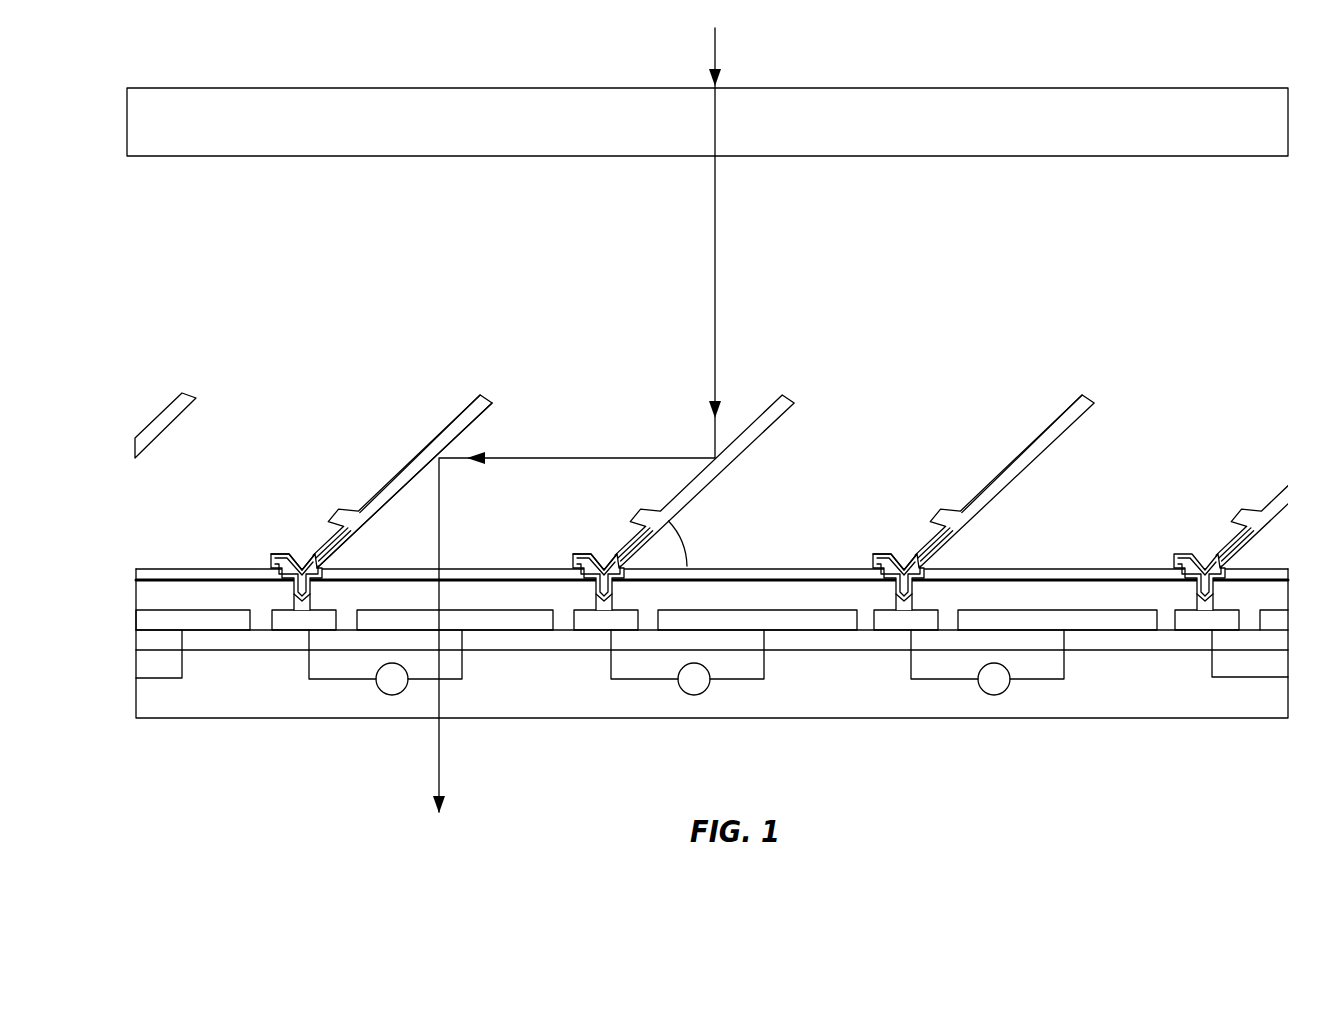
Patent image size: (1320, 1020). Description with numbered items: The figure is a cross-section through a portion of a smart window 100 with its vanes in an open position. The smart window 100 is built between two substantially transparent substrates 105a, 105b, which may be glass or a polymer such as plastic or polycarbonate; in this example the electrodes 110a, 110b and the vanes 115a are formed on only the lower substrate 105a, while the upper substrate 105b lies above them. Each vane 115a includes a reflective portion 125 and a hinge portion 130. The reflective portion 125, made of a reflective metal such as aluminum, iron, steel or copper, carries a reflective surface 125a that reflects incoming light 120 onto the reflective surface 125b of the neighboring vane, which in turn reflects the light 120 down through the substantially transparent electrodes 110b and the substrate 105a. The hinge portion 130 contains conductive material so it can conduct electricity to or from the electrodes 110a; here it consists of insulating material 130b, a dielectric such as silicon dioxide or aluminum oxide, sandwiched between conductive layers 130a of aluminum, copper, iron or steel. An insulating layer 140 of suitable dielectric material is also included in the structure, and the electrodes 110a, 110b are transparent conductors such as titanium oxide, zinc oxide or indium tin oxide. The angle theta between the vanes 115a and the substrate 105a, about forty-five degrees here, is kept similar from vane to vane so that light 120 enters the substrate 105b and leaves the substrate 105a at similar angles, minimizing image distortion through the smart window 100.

The smart window 100 is at (723, 420).
The substantially transparent substrate 105a is at (905, 705).
The substantially transparent substrate 105b is at (505, 138).
The electrode 110a is at (305, 618).
The electrode 110b is at (482, 622).
The vane 115a is at (456, 367).
The light 120 is at (717, 298).
The reflective portion 125 is at (511, 370).
The reflective surface 125a is at (748, 407).
The reflective surface 125b is at (410, 480).
The hinge portion 130 is at (298, 522).
The conductive layer 130a is at (922, 553).
The insulating material 130b is at (612, 553).
The insulating layer 140 is at (817, 598).